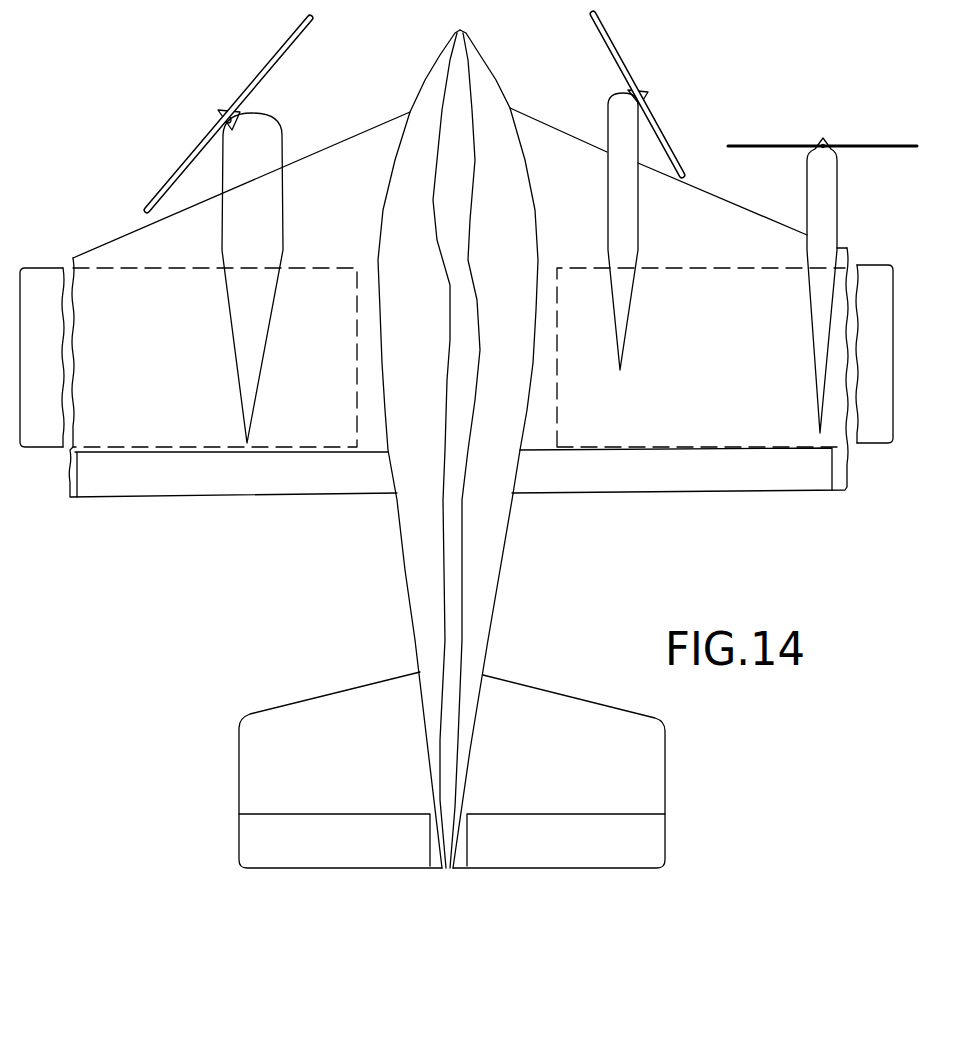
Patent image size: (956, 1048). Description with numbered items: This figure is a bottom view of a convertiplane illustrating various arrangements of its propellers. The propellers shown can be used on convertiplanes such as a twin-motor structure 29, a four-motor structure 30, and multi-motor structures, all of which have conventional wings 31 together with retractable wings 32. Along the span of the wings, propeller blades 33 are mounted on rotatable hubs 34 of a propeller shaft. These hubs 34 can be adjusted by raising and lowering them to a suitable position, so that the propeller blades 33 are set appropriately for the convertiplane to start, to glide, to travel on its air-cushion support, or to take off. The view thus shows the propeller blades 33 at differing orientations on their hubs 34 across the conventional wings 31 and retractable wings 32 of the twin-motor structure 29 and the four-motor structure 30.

The twin-motor structure 29 is at (428, 105).
The four-motor structure 30 is at (490, 93).
The conventional wing 31 is at (142, 255).
The retractable wing 32 is at (871, 280).
The propeller blade 33 is at (253, 85).
The rotatable hub 34 is at (218, 115).